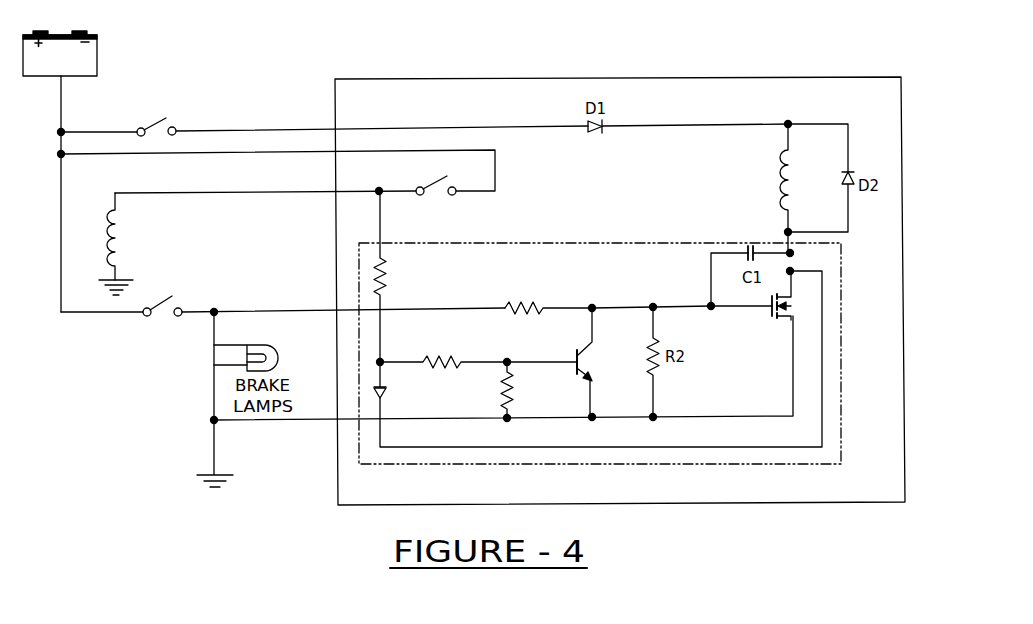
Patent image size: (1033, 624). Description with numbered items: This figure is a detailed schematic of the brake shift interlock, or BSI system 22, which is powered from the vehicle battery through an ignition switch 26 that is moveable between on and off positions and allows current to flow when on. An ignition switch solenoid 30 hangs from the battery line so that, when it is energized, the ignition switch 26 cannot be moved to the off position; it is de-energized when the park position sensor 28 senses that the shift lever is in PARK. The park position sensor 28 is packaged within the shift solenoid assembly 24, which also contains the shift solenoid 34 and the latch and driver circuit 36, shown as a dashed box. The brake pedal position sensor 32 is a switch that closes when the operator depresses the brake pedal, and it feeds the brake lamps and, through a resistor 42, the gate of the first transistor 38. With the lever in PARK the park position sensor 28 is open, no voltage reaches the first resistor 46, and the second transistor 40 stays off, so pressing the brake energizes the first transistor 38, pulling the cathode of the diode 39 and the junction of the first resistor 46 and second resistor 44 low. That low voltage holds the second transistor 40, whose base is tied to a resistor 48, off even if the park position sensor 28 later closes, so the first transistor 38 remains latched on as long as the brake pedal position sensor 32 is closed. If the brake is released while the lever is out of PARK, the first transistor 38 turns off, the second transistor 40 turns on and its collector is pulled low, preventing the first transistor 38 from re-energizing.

The BSI system 22 is at (262, 35).
The shift solenoid assembly 24 is at (707, 78).
The ignition switch 26 is at (165, 117).
The park position sensor 28 is at (436, 195).
The ignition switch solenoid 30 is at (108, 215).
The brake pedal position sensor 32 is at (160, 318).
The shift solenoid 34 is at (780, 172).
The latch and driver circuit 36 is at (845, 373).
The first transistor 38 is at (770, 306).
The diode 39 is at (385, 394).
The second transistor 40 is at (575, 360).
The resistor 42 is at (533, 302).
The second resistor 44 is at (452, 358).
The first resistor 46 is at (386, 288).
The resistor 48 is at (510, 398).